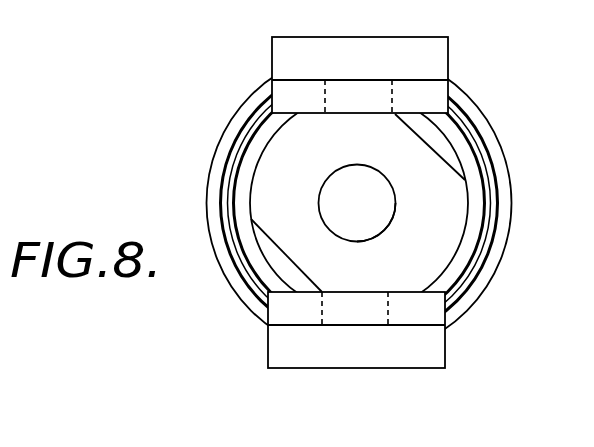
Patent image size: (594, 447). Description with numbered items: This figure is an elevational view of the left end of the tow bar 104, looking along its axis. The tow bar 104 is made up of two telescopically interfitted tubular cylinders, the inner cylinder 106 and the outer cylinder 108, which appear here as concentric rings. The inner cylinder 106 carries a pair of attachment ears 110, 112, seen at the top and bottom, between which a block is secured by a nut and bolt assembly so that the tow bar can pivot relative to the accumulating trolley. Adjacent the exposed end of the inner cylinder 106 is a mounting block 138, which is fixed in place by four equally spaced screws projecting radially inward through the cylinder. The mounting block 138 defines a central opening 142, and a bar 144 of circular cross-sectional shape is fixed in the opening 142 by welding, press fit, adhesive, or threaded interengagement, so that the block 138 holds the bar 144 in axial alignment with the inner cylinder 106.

The tow bar 104 is at (214, 163).
The inner cylinder 106 is at (463, 260).
The outer cylinder 108 is at (493, 153).
The attachment ear 110 is at (432, 55).
The attachment ear 112 is at (308, 357).
The mounting block 138 is at (292, 233).
The central opening 142 is at (342, 165).
The bar 144 is at (362, 222).